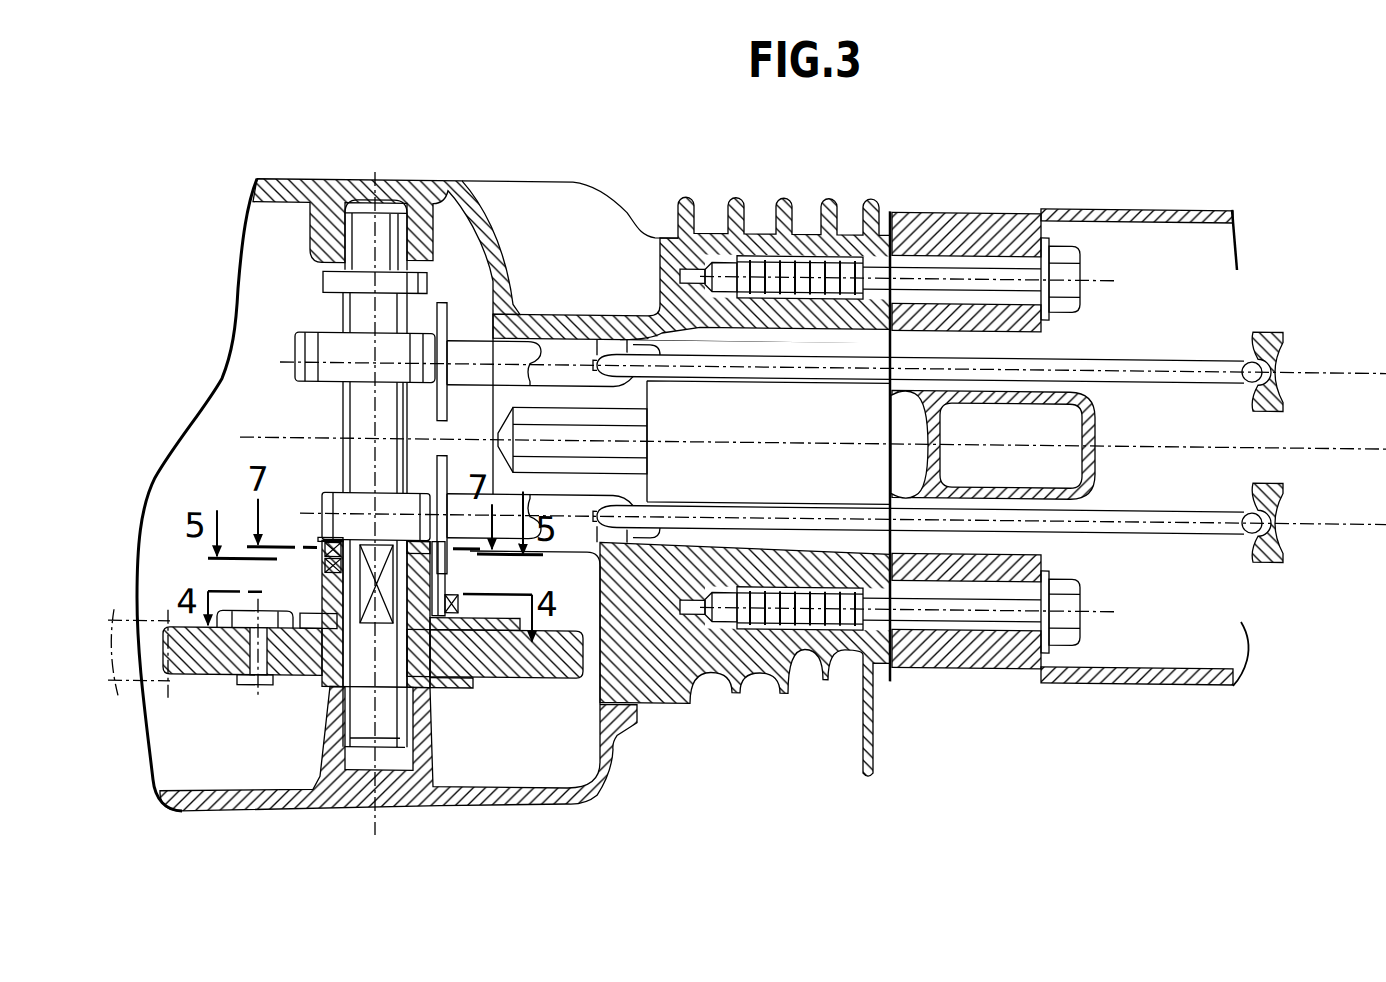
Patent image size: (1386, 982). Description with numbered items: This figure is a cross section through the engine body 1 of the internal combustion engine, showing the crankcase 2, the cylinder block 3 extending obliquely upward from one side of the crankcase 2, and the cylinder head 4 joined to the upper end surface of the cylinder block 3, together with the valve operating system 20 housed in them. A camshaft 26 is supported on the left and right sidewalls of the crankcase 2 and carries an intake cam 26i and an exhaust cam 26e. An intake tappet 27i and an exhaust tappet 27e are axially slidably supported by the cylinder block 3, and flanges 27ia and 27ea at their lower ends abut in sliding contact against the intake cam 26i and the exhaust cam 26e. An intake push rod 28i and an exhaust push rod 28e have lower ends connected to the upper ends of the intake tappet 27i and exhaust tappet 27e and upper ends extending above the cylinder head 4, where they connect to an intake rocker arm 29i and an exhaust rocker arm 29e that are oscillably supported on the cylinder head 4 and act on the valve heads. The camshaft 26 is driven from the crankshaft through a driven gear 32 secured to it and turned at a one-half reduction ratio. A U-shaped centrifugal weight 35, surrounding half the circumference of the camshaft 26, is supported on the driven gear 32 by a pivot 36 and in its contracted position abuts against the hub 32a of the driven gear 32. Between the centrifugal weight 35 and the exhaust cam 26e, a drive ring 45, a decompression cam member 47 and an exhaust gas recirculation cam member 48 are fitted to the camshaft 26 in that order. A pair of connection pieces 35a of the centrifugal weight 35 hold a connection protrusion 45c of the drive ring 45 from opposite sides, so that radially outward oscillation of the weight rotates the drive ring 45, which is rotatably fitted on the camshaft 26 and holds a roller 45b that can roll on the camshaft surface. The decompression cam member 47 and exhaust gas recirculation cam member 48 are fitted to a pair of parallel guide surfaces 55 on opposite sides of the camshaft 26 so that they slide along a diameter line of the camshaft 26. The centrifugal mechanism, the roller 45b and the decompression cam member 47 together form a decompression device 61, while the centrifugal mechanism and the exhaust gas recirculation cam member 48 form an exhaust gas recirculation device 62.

The engine body 1 is at (960, 200).
The crankcase 2 is at (290, 180).
The cylinder block 3 is at (778, 230).
The cylinder head 4 is at (1018, 204).
The valve operating system 20 is at (283, 307).
The camshaft 26 is at (365, 222).
The intake cam 26i is at (300, 368).
The exhaust cam 26e is at (322, 497).
The intake tappet 27i is at (510, 342).
The flange 27ia is at (450, 312).
The exhaust tappet 27e is at (518, 497).
The flange 27ea is at (505, 428).
The intake push rod 28i is at (745, 374).
The exhaust push rod 28e is at (745, 503).
The intake rocker arm 29i is at (1256, 322).
The exhaust rocker arm 29e is at (1258, 555).
The driven gear 32 is at (548, 680).
The hub 32a is at (442, 689).
The centrifugal weight 35 is at (517, 680).
The connection pieces 35a is at (458, 594).
The pivot 36 is at (257, 690).
The drive ring 45 is at (333, 627).
The roller 45b is at (392, 545).
The connection protrusion 45c is at (462, 680).
The decompression cam member 47 is at (318, 568).
The exhaust gas recirculation cam member 48 is at (376, 517).
The guide surfaces 55 is at (372, 611).
The decompression device 61 is at (322, 558).
The exhaust gas recirculation device 62 is at (320, 541).